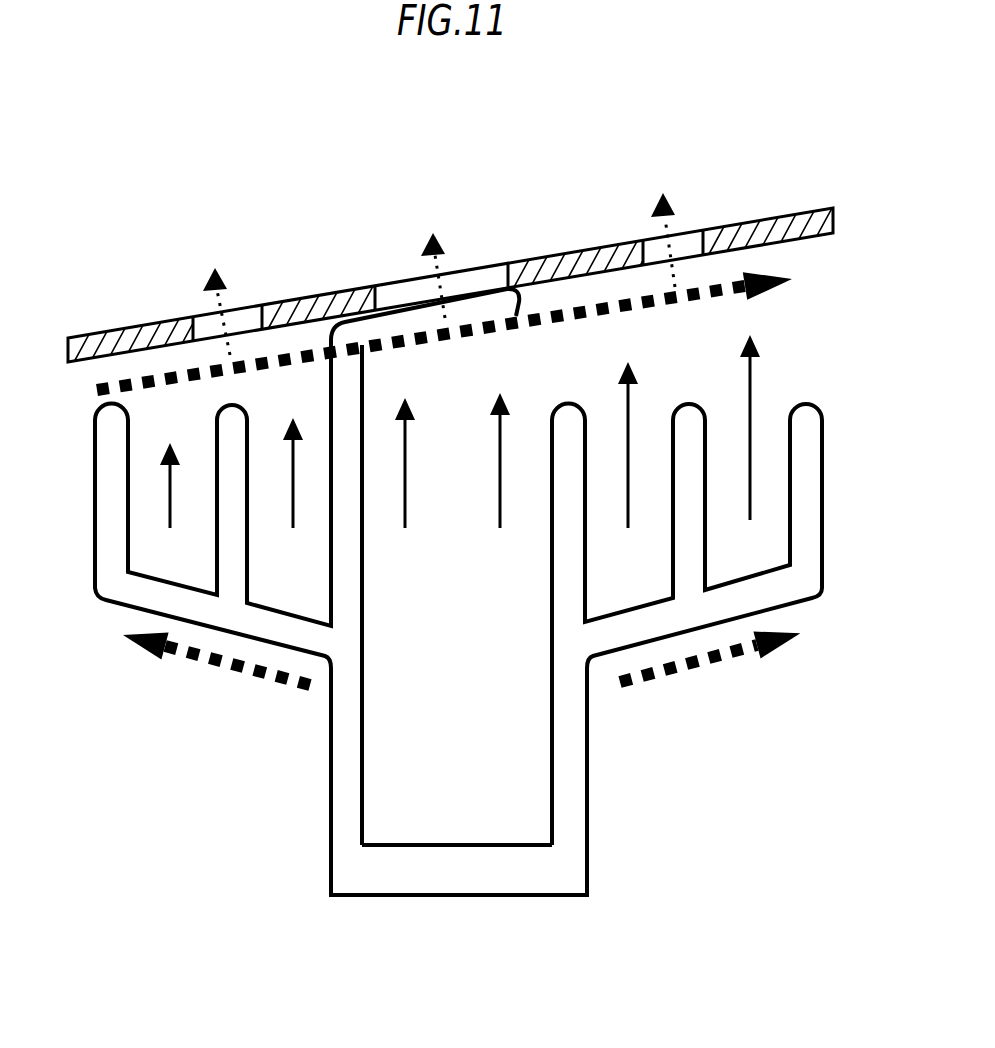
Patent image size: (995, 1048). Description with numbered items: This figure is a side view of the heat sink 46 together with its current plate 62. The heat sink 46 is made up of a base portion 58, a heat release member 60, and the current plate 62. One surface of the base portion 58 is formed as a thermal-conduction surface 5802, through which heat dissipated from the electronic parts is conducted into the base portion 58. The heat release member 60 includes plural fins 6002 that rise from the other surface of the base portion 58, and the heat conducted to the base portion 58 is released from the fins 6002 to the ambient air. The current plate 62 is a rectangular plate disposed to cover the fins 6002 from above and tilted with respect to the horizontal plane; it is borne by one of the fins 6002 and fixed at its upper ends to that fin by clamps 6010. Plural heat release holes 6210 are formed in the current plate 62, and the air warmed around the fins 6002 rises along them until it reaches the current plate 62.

The heat sink 46 is at (335, 203).
The current plate 62 is at (740, 223).
The heat release holes 6210 is at (262, 327).
The heat release member 60 is at (817, 500).
The fins 6002 is at (213, 440).
The clamps 6010 is at (483, 302).
The base portion 58 is at (392, 897).
The thermal-conduction surface 5802 is at (459, 827).